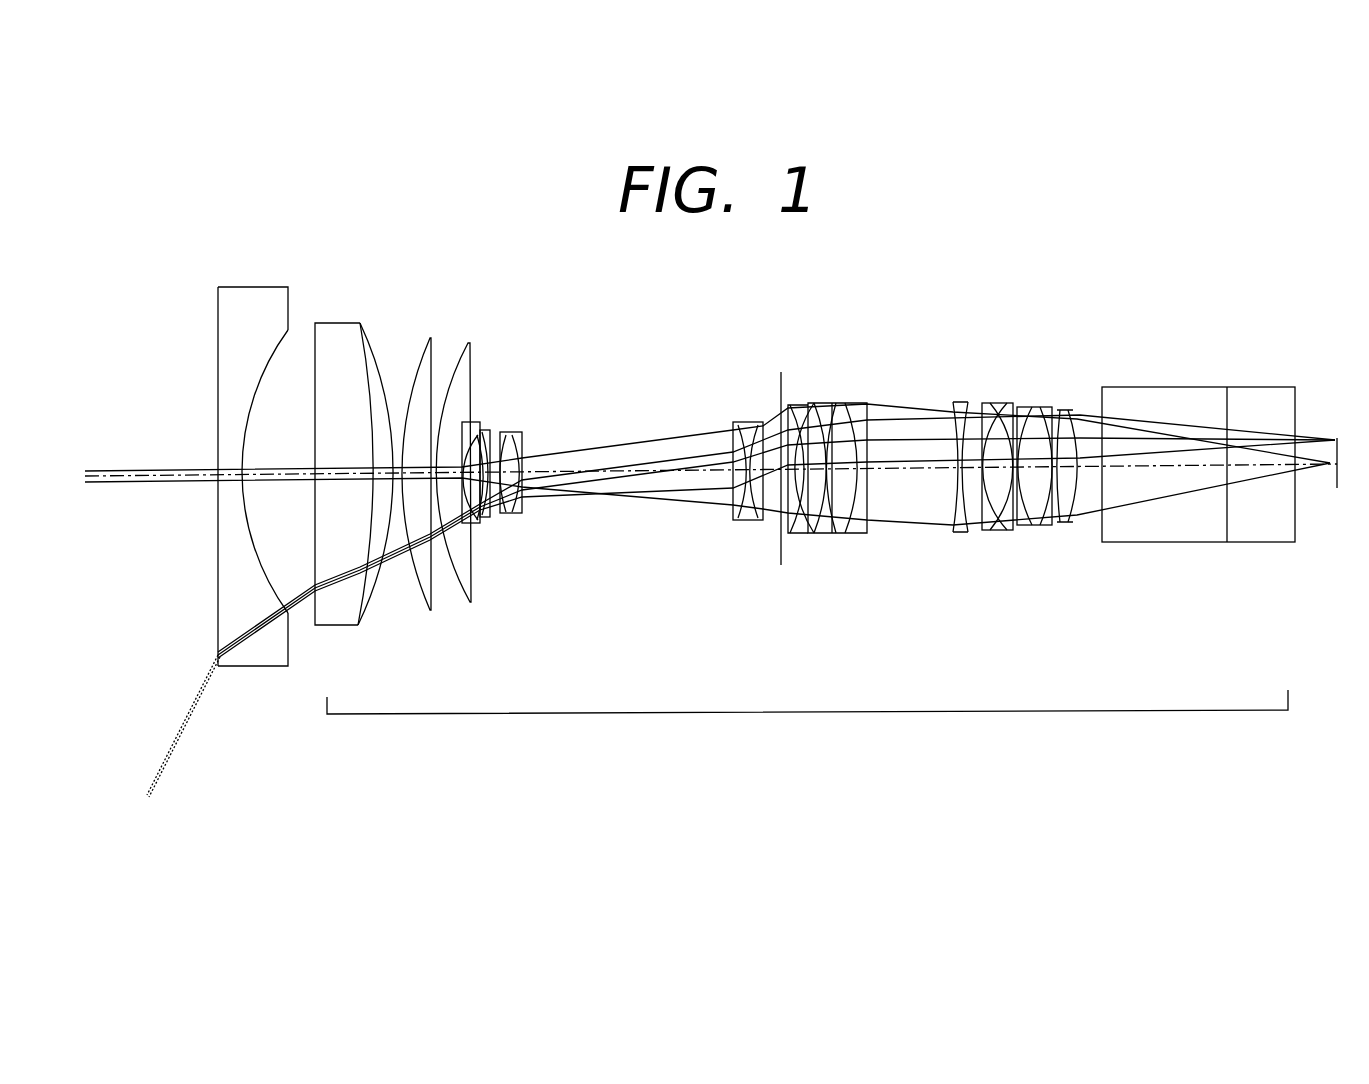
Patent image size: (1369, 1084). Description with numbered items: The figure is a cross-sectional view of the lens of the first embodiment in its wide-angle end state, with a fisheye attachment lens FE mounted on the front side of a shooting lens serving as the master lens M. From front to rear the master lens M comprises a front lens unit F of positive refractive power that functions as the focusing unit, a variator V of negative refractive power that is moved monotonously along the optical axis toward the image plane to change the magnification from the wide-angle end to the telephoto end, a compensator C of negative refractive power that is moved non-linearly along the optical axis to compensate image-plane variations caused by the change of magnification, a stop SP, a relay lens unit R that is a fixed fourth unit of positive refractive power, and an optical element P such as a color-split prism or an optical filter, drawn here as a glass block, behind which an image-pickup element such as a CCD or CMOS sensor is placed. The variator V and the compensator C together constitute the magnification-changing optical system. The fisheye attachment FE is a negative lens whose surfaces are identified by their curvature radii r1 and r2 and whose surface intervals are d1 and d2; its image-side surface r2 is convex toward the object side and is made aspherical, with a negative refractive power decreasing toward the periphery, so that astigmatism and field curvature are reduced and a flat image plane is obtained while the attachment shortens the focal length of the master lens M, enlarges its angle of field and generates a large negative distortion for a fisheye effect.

The lens surface r1 is at (218, 352).
The image-side surface r2 is at (267, 382).
The surface interval d1 is at (228, 471).
The surface interval d2 is at (277, 483).
The fisheye attachment lens FE is at (244, 513).
The front lens unit F is at (485, 647).
The variator V is at (523, 617).
The stop SP is at (781, 352).
The compensator C is at (751, 558).
The relay lens unit R is at (1082, 643).
The color split prism or optical filter P is at (1288, 640).
The master lens M is at (807, 722).